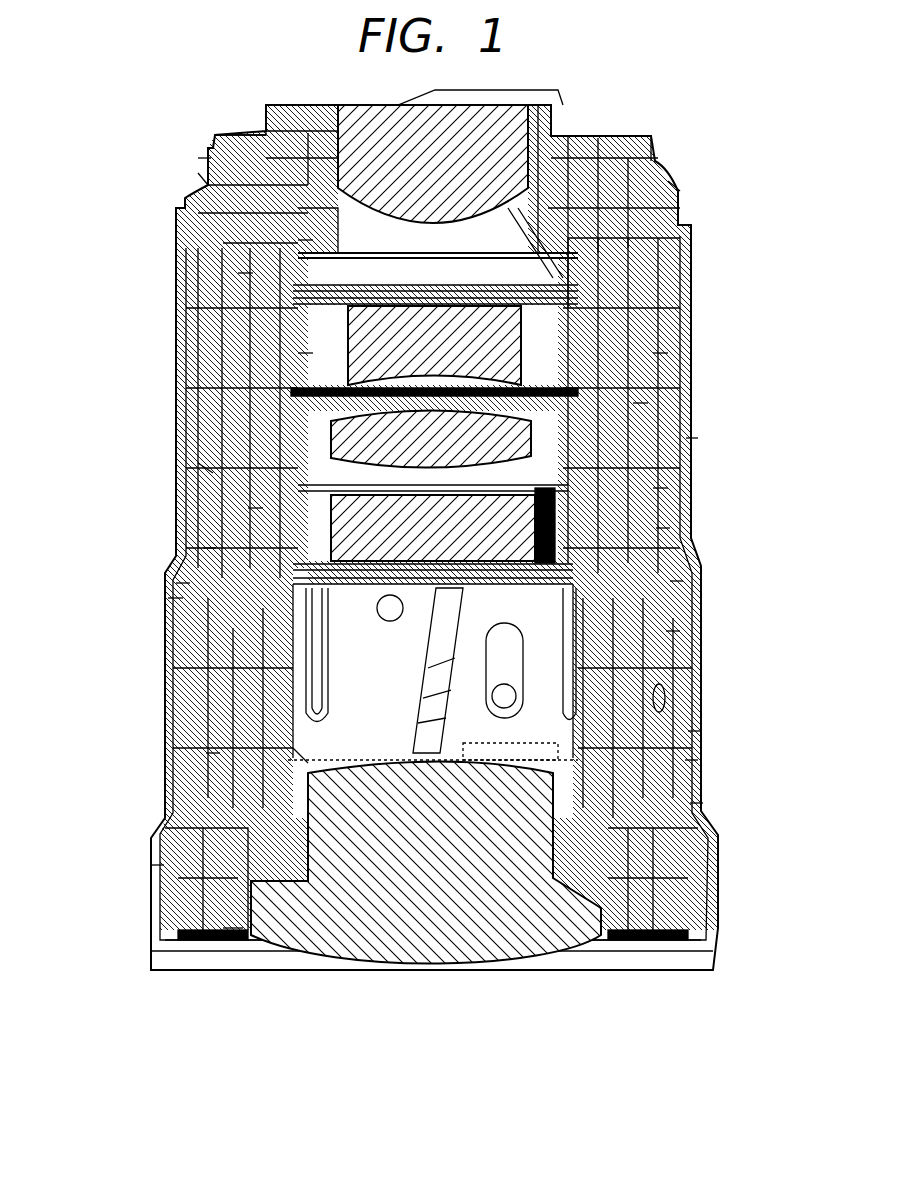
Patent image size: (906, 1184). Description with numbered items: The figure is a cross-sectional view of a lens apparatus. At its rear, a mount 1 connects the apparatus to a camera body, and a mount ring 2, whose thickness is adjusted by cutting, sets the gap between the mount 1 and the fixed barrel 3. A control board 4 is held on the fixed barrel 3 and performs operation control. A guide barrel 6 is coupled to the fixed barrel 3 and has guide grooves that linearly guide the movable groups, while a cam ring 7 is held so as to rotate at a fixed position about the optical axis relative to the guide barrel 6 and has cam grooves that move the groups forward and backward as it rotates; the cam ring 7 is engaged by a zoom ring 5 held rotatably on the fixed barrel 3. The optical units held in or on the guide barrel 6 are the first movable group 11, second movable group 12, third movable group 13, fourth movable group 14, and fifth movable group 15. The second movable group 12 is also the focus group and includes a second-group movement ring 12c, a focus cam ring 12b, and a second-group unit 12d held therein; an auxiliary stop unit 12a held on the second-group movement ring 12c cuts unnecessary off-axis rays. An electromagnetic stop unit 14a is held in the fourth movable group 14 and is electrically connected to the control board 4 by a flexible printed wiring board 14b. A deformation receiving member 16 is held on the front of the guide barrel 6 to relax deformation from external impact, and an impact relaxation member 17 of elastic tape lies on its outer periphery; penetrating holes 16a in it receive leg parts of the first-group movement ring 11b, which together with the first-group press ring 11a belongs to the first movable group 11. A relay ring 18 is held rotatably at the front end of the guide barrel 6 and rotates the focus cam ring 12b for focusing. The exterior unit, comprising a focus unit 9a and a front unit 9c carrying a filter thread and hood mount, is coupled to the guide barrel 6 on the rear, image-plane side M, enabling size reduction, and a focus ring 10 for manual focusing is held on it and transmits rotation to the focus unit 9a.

The mount 1 is at (230, 130).
The rear side (image plane side) M is at (203, 150).
The mount ring 2 is at (195, 170).
The fifth movable group 15 is at (300, 233).
The flexible printed wiring board 14b is at (240, 265).
The fourth movable group 14 is at (300, 345).
The focus unit 9a is at (195, 460).
The second-group movement ring 12c is at (250, 500).
The focus cam ring 12b is at (200, 540).
The second movable group 12 is at (175, 575).
The focus ring 10 is at (168, 590).
The first-group movement ring 11b is at (205, 745).
The penetrating holes 16a is at (290, 752).
The front unit 9c is at (148, 857).
The first-group press ring 11a is at (225, 932).
The first movable group 11 is at (578, 940).
The control board 4 is at (627, 153).
The zoom ring 5 is at (683, 222).
The electromagnetic stop unit 14a is at (650, 345).
The third movable group 13 is at (630, 395).
The fixed barrel 3 is at (683, 430).
The second-group unit 12d is at (650, 478).
The guide barrel 6 is at (653, 520).
The cam ring 7 is at (667, 573).
The auxiliary stop unit 12a is at (663, 623).
The impact relaxation member 17 is at (685, 723).
The deformation receiving member 16 is at (682, 752).
The relay ring 18 is at (687, 795).